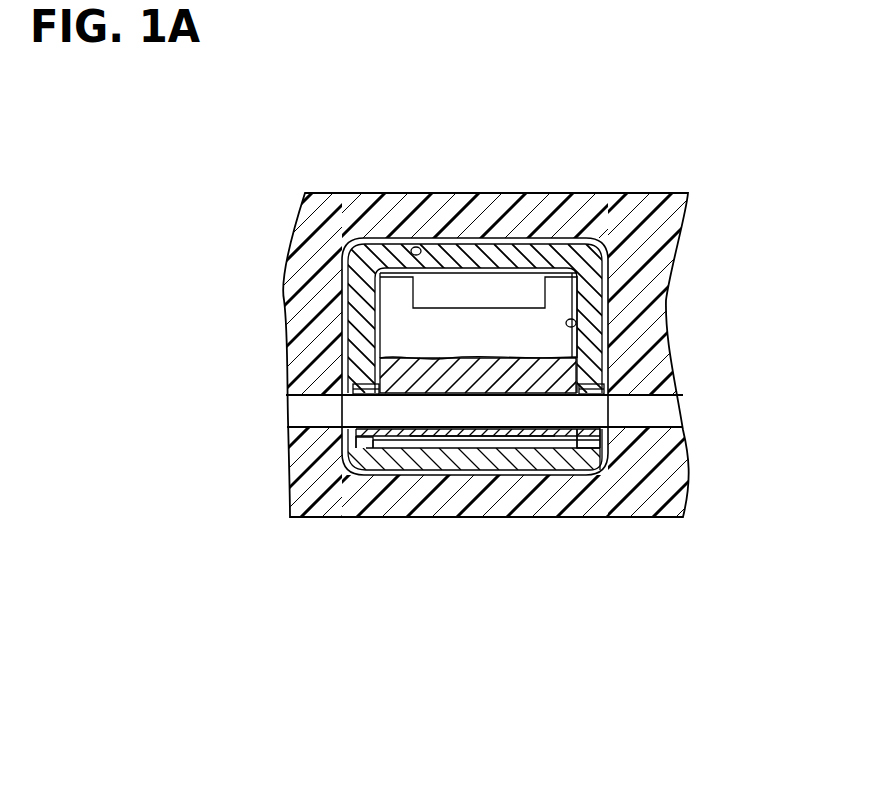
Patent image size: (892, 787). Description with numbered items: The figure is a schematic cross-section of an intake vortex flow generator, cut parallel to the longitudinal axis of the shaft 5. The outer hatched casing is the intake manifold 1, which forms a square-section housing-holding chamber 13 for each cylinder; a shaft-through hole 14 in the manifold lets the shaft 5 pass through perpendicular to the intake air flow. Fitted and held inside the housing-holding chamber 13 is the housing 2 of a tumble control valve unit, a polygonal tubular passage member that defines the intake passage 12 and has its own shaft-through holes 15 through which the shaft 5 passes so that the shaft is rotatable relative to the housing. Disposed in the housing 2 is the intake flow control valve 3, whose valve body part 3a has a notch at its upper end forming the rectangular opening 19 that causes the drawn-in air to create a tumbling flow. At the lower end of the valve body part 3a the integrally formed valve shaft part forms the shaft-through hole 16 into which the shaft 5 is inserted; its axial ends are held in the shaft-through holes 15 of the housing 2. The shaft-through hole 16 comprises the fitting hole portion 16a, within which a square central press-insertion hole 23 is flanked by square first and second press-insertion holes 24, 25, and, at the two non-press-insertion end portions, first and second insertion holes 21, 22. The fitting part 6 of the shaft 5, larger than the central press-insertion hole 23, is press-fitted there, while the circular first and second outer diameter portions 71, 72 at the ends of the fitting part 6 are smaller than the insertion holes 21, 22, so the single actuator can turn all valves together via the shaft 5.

The intake manifold 1 is at (324, 193).
The housing 2 is at (541, 253).
The intake flow control valve 3 is at (396, 318).
The valve body part 3a is at (586, 290).
The shaft 5 is at (664, 406).
The fitting part 6 is at (489, 405).
The intake passage 12 is at (576, 323).
The housing-holding chamber 13 is at (412, 248).
The shaft-through hole 14 is at (643, 399).
The shaft-through hole 15 is at (358, 400).
The shaft-through hole 16 is at (602, 630).
The fitting hole portion 16a is at (558, 577).
The opening 19 is at (469, 306).
The first insertion hole 21 is at (368, 398).
The second insertion hole 22 is at (581, 403).
The central press-insertion hole 23 is at (486, 402).
The first press-insertion hole 24 is at (436, 397).
The second press-insertion hole 25 is at (535, 398).
The first outer diameter portion 71 is at (358, 389).
The second outer diameter portion 72 is at (600, 387).